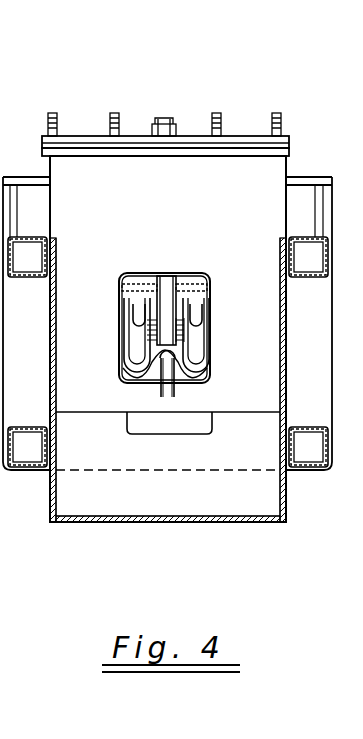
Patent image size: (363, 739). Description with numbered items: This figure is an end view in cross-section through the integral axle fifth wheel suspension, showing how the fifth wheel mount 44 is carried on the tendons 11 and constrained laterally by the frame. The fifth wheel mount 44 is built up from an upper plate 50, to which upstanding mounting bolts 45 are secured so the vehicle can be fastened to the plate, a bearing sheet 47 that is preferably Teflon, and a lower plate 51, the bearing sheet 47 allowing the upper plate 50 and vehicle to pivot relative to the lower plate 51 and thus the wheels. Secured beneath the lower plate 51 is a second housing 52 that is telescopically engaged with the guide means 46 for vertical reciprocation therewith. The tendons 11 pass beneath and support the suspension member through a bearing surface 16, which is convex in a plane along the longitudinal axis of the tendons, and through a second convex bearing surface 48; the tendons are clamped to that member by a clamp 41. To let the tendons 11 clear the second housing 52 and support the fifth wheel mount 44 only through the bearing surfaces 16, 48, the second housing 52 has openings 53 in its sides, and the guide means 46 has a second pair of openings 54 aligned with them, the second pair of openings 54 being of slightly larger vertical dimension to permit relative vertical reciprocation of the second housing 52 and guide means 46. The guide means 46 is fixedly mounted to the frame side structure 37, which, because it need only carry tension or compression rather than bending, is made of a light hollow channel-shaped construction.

The tendon 11 is at (133, 309).
The bearing surface 16 is at (180, 351).
The frame side structure 37 is at (26, 278).
The clamp 41 is at (157, 274).
The fifth wheel mount 44 is at (193, 118).
The mounting bolts 45 is at (106, 126).
The guide means 46 is at (290, 349).
The bearing sheet 47 is at (135, 146).
The second convex bearing surface 48 is at (185, 341).
The upper plate 50 is at (288, 144).
The lower plate 51 is at (233, 160).
The second housing 52 is at (172, 225).
The openings 53 is at (200, 273).
The second pair of openings 54 is at (208, 292).